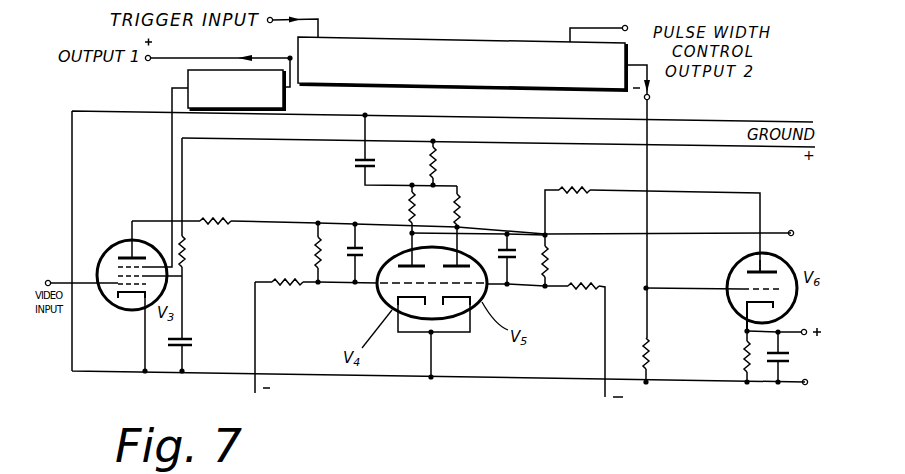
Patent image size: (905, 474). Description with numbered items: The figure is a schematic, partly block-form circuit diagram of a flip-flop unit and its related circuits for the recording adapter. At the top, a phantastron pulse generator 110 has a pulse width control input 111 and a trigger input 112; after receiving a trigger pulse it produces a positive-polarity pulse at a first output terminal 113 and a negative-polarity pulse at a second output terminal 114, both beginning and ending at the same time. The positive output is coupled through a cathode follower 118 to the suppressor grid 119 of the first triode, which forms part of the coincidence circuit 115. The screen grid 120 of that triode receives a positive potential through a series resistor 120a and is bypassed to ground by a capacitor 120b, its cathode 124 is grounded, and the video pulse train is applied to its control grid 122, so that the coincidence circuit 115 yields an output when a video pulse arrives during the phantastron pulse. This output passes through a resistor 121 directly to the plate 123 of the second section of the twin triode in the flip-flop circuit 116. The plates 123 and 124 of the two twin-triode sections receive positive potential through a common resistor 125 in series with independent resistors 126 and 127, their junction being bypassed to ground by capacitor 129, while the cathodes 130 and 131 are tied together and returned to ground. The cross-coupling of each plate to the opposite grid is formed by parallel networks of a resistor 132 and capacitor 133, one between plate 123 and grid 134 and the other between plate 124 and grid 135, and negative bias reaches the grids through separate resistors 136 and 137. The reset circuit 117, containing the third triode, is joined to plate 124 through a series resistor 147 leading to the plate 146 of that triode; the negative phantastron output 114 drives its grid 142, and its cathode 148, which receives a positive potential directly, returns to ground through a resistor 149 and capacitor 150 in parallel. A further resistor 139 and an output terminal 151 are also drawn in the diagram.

The phantastron pulse generator 110 is at (472, 84).
The pulse width control input 111 is at (627, 31).
The trigger input 112 is at (268, 23).
The first output terminal 113 is at (147, 64).
The second output terminal 114 is at (653, 91).
The coincidence circuit 115 is at (100, 247).
The flip-flop circuit 116 is at (370, 318).
The reset circuit 117 is at (713, 317).
The cathode follower 118 is at (284, 97).
The suppressor grid 119 is at (168, 262).
The screen grid 120 is at (180, 283).
The series resistor 120a is at (186, 250).
The capacitor 120b is at (185, 340).
The resistor 121 is at (214, 215).
The control grid 122 is at (86, 303).
The plate of V-5 123 is at (462, 238).
The plate of V-4 / cathode of V-3 124 is at (410, 233).
The common resistor 125 is at (440, 163).
The plate resistor 126 is at (465, 207).
The plate resistor 127 is at (405, 205).
The by-pass capacitor 129 is at (352, 163).
The cathode of V-4 130 is at (410, 336).
The cathode of V-5 131 is at (477, 305).
The resistor 132 is at (312, 242).
The capacitor 133 is at (343, 248).
The grid of V-4 134 is at (370, 284).
The grid of V-5 135 is at (500, 292).
The grid resistor 136 is at (285, 288).
The grid resistor 137 is at (583, 302).
The resistor 139 is at (649, 342).
The grid of V-6 142 is at (733, 287).
The plate of V-6 146 is at (765, 246).
The series resistor 147 is at (576, 195).
The cathode of V-6 148 is at (742, 316).
The cathode resistor 149 is at (742, 362).
The cathode capacitor 150 is at (792, 360).
The output terminal 151 is at (792, 231).